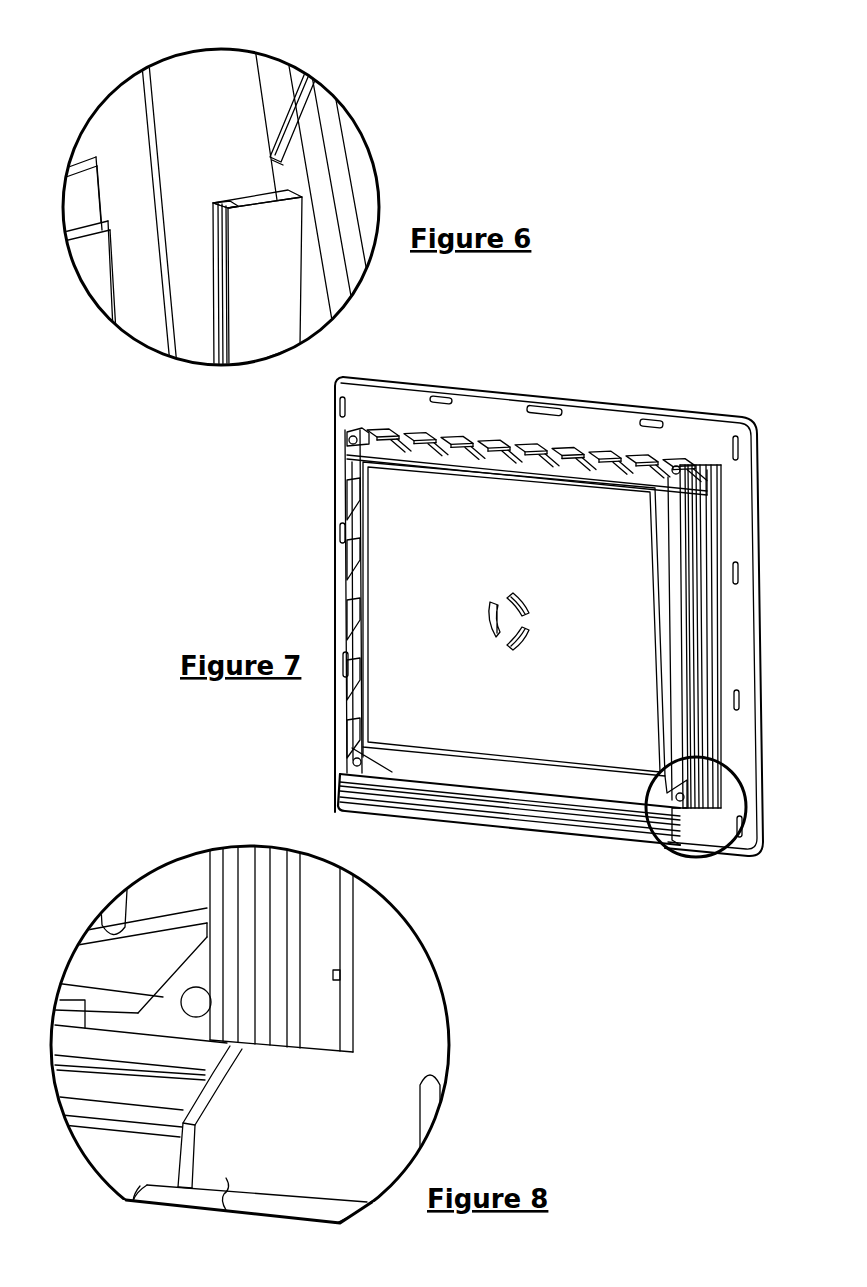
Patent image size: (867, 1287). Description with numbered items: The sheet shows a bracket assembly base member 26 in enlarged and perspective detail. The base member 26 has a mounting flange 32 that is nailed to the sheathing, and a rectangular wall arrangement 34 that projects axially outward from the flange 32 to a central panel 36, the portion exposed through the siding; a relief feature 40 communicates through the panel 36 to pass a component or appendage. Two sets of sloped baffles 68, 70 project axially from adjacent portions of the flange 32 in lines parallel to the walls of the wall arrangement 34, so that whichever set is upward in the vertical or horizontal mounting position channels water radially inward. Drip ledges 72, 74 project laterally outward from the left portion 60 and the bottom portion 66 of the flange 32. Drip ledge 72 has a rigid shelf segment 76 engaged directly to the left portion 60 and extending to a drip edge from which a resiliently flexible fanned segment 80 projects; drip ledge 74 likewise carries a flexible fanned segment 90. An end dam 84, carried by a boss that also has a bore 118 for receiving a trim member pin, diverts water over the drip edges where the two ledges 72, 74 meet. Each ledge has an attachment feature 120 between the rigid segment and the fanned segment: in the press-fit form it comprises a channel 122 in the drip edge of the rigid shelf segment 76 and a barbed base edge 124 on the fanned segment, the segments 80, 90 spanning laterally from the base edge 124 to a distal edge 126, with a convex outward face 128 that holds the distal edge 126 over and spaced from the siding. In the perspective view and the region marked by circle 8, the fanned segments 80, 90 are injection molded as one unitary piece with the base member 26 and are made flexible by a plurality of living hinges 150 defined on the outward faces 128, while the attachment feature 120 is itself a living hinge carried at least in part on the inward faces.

In FIG. 7, the base member 26 is at (670, 360).
In FIG. 6, the mounting flange 32 is at (306, 168).
In FIG. 7, the mounting flange 32 is at (496, 422).
In FIG. 6, the rectangular wall arrangement 34 is at (188, 68).
In FIG. 7, the rectangular wall arrangement 34 is at (668, 538).
In FIG. 7, the central panel 36 is at (597, 548).
In FIG. 7, the relief feature 40 is at (527, 640).
In FIG. 8, the left portion 60 is at (226, 1208).
In FIG. 8, the bottom portion 66 is at (407, 948).
In FIG. 6, the sloped baffles 68 is at (296, 110).
In FIG. 7, the sloped baffles 68 is at (572, 438).
In FIG. 7, the sloped baffles 70 is at (338, 596).
In FIG. 7, the drip ledge 72 is at (726, 646).
In FIG. 8, the drip ledge 72 is at (362, 1003).
In FIG. 7, the drip ledge 74 is at (638, 846).
In FIG. 8, the drip ledge 74 is at (110, 1152).
In FIG. 6, the shelf segment 76 is at (255, 340).
In FIG. 8, the fanned segment 80 is at (337, 1040).
In FIG. 8, the end dam 84 is at (192, 940).
In FIG. 8, the fanned segment 90 is at (178, 1158).
In FIG. 7, the bore 118 is at (679, 466).
In FIG. 8, the bore 118 is at (180, 1002).
In FIG. 8, the attachment feature 120 is at (247, 1047).
In FIG. 6, the channel 122 is at (217, 208).
In FIG. 6, the base edge 124 is at (115, 248).
In FIG. 8, the base edge 124 is at (62, 1020).
In FIG. 8, the distal edge 126 is at (347, 905).
In FIG. 7, the outward face 128 is at (328, 842).
In FIG. 8, the outward face 128 is at (322, 876).
In FIG. 8, the living hinges 150 is at (258, 878).
In FIG. 7, the circle 8 is at (741, 790).